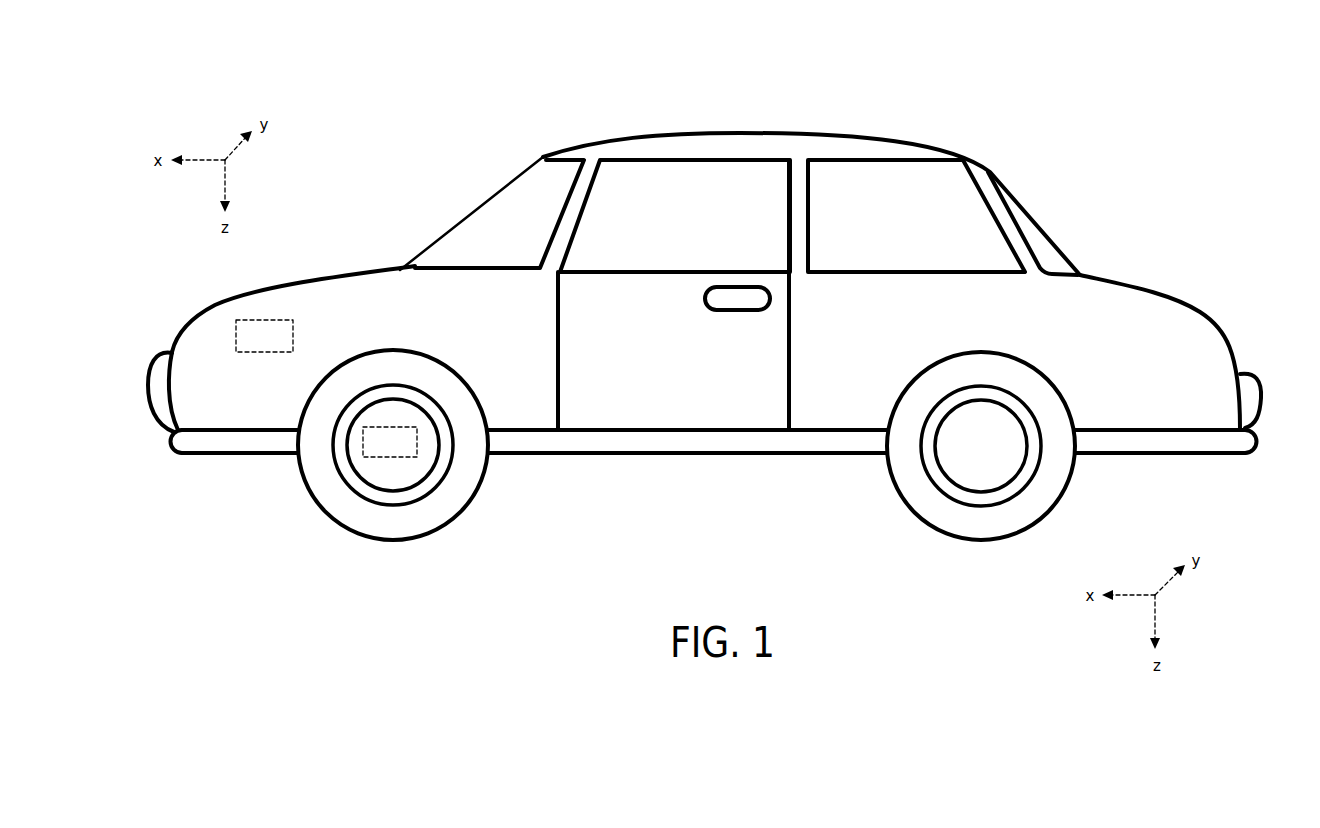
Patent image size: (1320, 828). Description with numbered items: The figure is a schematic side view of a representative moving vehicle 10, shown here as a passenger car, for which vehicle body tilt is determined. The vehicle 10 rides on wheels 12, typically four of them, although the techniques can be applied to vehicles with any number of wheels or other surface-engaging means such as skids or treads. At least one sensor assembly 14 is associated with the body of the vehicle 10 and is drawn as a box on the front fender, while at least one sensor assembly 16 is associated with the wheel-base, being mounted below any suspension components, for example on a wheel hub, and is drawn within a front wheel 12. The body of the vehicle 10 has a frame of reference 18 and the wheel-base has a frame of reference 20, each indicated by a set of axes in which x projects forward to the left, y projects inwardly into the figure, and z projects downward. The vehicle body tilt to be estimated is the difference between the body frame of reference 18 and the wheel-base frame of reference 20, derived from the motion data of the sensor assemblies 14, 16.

The vehicle 10 is at (727, 133).
The wheels 12 is at (328, 508).
The sensor assembly 14 is at (253, 346).
The sensor assembly 16 is at (379, 451).
The frame of reference 18 is at (340, 280).
The frame of reference 20 is at (1048, 510).